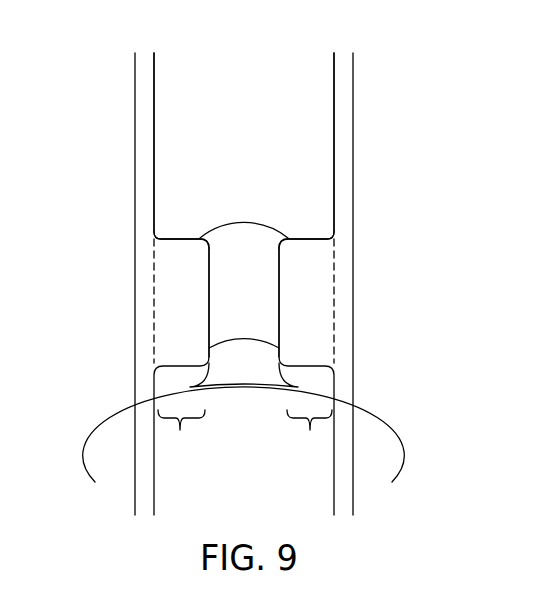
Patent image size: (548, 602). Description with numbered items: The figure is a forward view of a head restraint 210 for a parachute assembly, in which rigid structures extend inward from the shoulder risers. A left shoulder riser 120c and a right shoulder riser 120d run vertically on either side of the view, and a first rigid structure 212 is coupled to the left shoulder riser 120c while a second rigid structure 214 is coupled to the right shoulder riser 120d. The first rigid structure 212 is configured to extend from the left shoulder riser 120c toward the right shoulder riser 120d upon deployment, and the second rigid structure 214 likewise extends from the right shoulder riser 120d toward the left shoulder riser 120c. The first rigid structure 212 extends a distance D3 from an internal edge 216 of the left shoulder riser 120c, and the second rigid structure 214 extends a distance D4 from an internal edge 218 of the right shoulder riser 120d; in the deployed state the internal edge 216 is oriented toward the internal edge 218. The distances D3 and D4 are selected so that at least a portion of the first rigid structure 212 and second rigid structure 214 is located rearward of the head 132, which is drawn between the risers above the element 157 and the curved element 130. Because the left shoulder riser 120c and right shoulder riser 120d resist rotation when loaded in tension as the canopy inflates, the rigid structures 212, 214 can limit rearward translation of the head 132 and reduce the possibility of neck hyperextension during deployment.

The head restraint 210 is at (131, 234).
The left shoulder riser 120c is at (141, 136).
The right shoulder riser 120d is at (343, 126).
The internal edge 216 is at (154, 91).
The internal edge 218 is at (334, 87).
The first rigid structure 212 is at (180, 260).
The second rigid structure 214 is at (305, 256).
The head 132 is at (253, 279).
The base region 157 is at (256, 477).
The balloon / curved member 130 is at (148, 448).
The distance D3 is at (181, 432).
The distance D4 is at (309, 432).